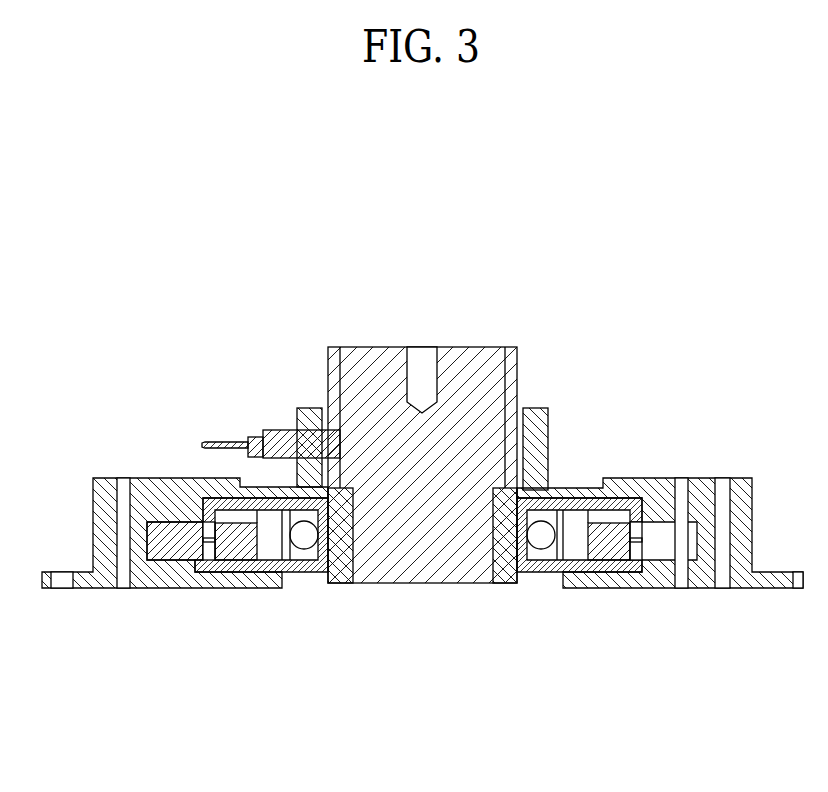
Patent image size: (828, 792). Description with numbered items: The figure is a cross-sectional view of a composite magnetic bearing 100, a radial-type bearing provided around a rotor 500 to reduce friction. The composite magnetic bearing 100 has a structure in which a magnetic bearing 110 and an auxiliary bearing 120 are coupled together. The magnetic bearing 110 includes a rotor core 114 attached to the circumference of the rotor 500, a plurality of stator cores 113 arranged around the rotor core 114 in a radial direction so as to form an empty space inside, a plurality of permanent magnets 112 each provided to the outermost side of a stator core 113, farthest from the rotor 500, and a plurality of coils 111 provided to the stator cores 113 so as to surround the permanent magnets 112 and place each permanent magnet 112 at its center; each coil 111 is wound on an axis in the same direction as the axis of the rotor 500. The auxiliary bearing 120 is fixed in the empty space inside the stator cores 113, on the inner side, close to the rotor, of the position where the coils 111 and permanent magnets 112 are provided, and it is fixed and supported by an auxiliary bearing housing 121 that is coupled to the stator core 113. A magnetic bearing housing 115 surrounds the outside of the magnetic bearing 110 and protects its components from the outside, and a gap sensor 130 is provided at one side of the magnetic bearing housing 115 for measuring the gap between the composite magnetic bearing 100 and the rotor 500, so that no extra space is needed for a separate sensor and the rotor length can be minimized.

The composite magnetic bearing 100 is at (702, 478).
The magnetic bearing 110 is at (253, 590).
The coil 111 is at (163, 553).
The permanent magnet 112 is at (210, 549).
The stator core 113 is at (270, 500).
The rotor core 114 is at (344, 567).
The magnetic bearing housing 115 is at (162, 478).
The auxiliary bearing 120 is at (535, 543).
The auxiliary bearing housing 121 is at (580, 543).
The gap sensor 130 is at (277, 430).
The rotor 500 is at (487, 355).